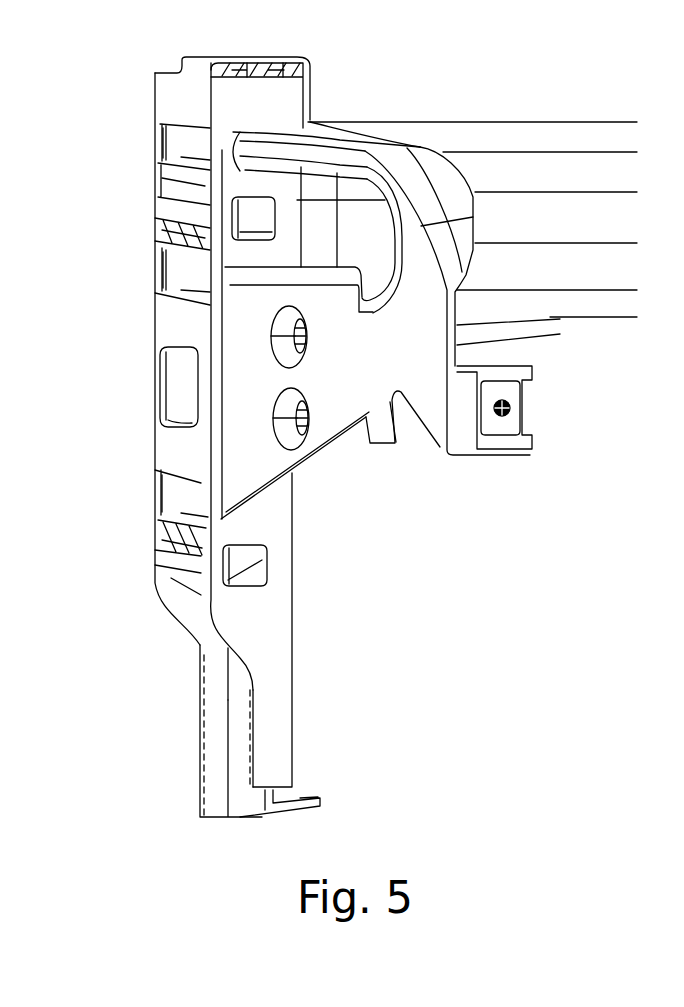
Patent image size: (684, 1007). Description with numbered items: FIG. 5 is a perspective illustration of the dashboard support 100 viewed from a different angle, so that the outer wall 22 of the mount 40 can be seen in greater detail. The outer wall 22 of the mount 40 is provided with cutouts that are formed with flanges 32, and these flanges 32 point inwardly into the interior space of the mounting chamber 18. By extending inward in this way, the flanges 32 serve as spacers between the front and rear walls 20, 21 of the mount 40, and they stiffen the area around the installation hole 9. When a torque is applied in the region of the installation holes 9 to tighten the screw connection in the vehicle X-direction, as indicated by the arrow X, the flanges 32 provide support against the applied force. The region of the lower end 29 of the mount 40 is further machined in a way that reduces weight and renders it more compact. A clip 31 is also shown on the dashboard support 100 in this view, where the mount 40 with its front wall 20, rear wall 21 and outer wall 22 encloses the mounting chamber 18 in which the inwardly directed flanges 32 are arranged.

The installation hole 9 is at (252, 218).
The mounting chamber 18 is at (180, 598).
The front wall 20 is at (205, 673).
The rear wall 21 is at (283, 603).
The outer wall 22 is at (152, 324).
The lower end 29 is at (352, 788).
The clip 31 is at (180, 138).
The flange 32 is at (184, 192).
The mount 40 is at (231, 436).
The dashboard support 100 is at (528, 519).
The arrow X is at (456, 604).